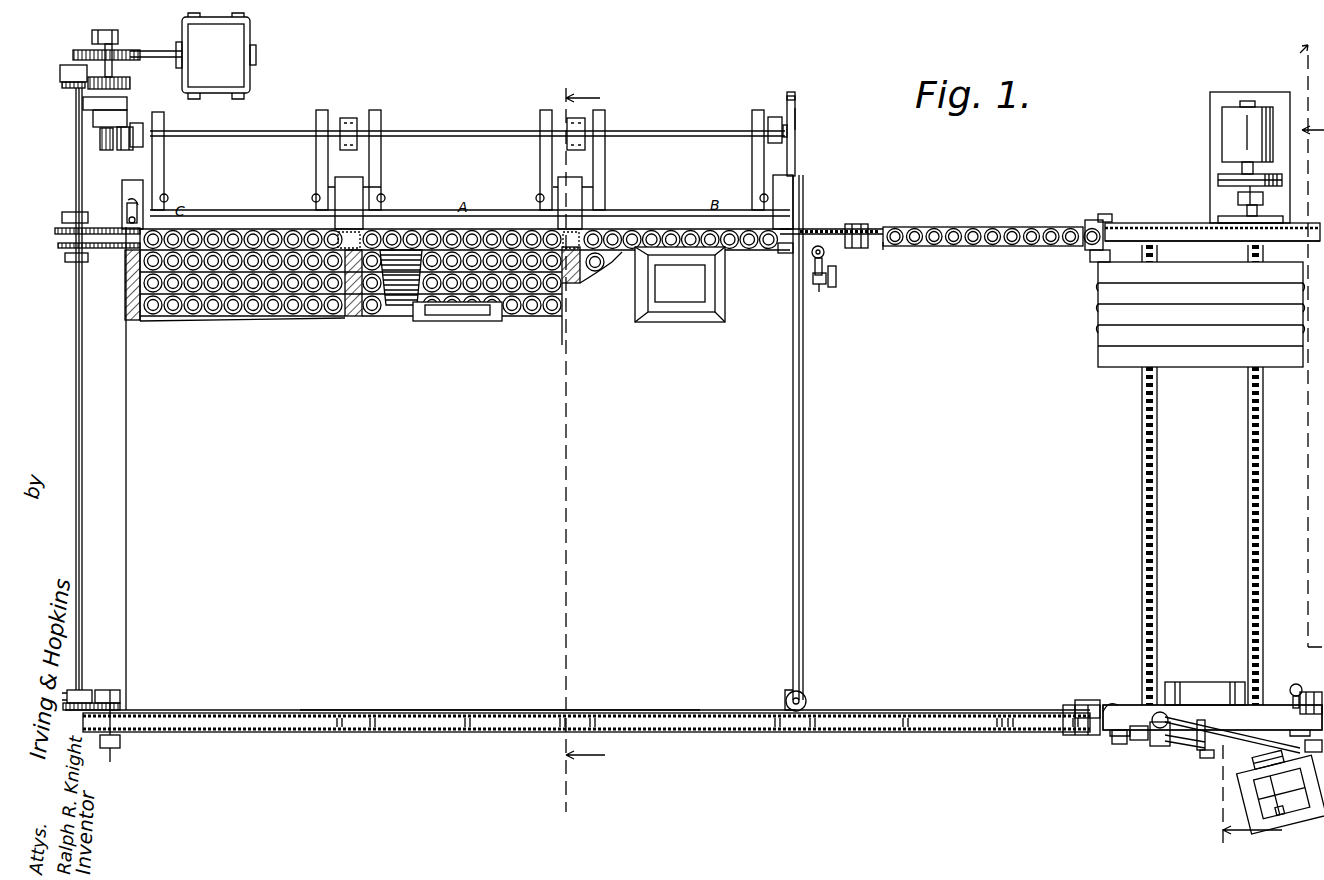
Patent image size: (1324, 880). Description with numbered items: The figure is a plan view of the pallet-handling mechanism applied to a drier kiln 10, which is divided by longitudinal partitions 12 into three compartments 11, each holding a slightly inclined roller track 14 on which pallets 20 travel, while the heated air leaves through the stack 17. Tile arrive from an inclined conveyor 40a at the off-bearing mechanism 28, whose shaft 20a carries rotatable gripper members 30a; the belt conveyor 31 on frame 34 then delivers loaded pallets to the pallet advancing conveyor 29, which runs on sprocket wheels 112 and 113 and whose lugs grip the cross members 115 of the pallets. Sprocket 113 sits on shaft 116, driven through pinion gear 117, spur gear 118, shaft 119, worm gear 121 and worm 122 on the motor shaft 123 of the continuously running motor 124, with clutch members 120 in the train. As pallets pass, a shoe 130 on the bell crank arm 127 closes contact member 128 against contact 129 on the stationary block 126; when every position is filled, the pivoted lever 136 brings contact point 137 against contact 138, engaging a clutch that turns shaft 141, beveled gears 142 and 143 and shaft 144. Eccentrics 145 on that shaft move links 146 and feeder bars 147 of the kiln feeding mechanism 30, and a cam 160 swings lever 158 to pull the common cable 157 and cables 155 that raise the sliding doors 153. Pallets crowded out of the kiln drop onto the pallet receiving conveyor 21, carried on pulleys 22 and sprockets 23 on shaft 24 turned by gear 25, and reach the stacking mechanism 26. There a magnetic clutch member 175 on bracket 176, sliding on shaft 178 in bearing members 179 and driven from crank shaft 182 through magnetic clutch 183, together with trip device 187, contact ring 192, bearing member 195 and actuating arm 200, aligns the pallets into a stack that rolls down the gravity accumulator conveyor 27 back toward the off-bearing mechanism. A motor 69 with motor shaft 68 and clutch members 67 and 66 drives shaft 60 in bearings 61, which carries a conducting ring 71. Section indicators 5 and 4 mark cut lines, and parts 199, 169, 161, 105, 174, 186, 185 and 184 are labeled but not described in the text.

The section line 5- 5 is at (564, 446).
The section line 4- 4 is at (1270, 452).
The drier kiln 10 is at (790, 406).
The common cable 157 is at (804, 561).
The pallet receiving conveyor 21 is at (318, 732).
The door 153 is at (440, 712).
The compartment 11 is at (262, 320).
The partition 12 is at (354, 318).
The pivoted lever 136 is at (135, 250).
The track 14 is at (400, 306).
The stack 17 is at (476, 321).
The feeder bar 147 is at (238, 226).
The kiln feeding mechanism 30 is at (648, 218).
The link 146 is at (166, 163).
The shaft 144 is at (210, 137).
The eccentric 145 is at (345, 118).
The motor 124 is at (216, 56).
The motor shaft 123 is at (156, 50).
The worm gear 121 is at (80, 50).
The worm 122 is at (95, 30).
The shaft 119 is at (114, 70).
The spur gear 118 is at (131, 84).
The clutch member 120 is at (127, 100).
The shaft 141 is at (127, 114).
The pinion gear 117 is at (64, 82).
The beveled gear 142 is at (103, 139).
The beveled gear 143 is at (121, 150).
The shaft 116 is at (84, 569).
The sprocket wheel 113 is at (62, 218).
The cross member 115 is at (897, 251).
The contact 138 is at (143, 200).
The contact point 137 is at (128, 200).
The cable 155 is at (127, 216).
The bearing/housing 199 is at (68, 690).
The gear 25 is at (120, 696).
The sprocket 23 is at (125, 742).
The shaft 24 is at (112, 763).
The lever 158 is at (797, 150).
The cap 169 is at (795, 96).
The plate 161 is at (796, 118).
The cam 160 is at (796, 132).
The pallet advancing conveyor 29 is at (796, 228).
The sprocket wheel 112 is at (830, 229).
The frame 34 is at (862, 224).
The shoe 130 is at (780, 253).
The stationary block 126 is at (824, 256).
The bell crank arm 127 is at (813, 276).
The contact 129 is at (836, 284).
The contact member 128 is at (818, 292).
The belt conveyor 31 is at (890, 227).
The gripper member 30a is at (1086, 226).
The shaft 20a is at (1108, 210).
The off-bearing mechanism 28 is at (1149, 223).
The inclined conveyor 40a is at (1185, 243).
The pallet 20 is at (1103, 366).
The slats 105 is at (1098, 352).
The accumulator conveyor 27 is at (1247, 567).
The motor 69 is at (1235, 121).
The motor shaft 68 is at (1242, 168).
The clutch member 67 is at (1218, 177).
The magnetic clutch member 66 is at (1218, 186).
The bearing 61 is at (1236, 195).
The shaft 60 is at (1247, 210).
The conducting ring 71 is at (1218, 218).
The actuating arm 200 is at (1212, 720).
The magnetic clutch member 175 is at (1130, 694).
The bracket 174 is at (1088, 700).
The pulley 22 is at (1080, 735).
The pivot 186 is at (1116, 744).
The bracket 176 is at (1138, 741).
The stacking mechanism 26 is at (1160, 746).
The shaft 178 is at (1178, 744).
The bearing member 179 is at (1205, 758).
The contact ring 192 is at (1265, 740).
The trip device 187 is at (1296, 684).
The bearing member 195 is at (1318, 692).
The clamp 185 is at (1314, 749).
The magnetic clutch 183 is at (1264, 760).
The crank shaft 182 is at (1280, 794).
The pin 184 is at (1265, 805).